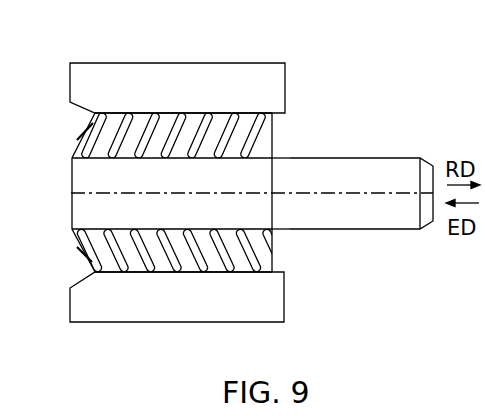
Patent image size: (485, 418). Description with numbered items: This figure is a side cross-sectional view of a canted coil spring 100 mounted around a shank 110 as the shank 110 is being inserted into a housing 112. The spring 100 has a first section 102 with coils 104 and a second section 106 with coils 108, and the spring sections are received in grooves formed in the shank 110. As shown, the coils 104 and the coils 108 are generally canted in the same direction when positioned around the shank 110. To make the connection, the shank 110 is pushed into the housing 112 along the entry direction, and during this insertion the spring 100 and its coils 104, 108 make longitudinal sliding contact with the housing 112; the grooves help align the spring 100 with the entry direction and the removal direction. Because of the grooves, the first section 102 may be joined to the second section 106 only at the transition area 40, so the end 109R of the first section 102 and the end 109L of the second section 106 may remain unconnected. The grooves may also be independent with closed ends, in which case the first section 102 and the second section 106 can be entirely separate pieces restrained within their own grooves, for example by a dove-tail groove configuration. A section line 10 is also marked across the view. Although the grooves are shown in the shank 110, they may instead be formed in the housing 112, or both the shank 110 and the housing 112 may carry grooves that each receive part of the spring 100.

The section line 10- 10 is at (110, 353).
The transition area 40 is at (64, 193).
The spring 100 is at (240, 133).
The first section 102 is at (283, 132).
The coils 104 is at (167, 147).
The second section 106 is at (272, 262).
The coils 108 is at (185, 268).
The end of the first section 109R is at (274, 163).
The end of the second section 109L is at (273, 223).
The shank 110 is at (372, 172).
The housing 112 is at (259, 72).